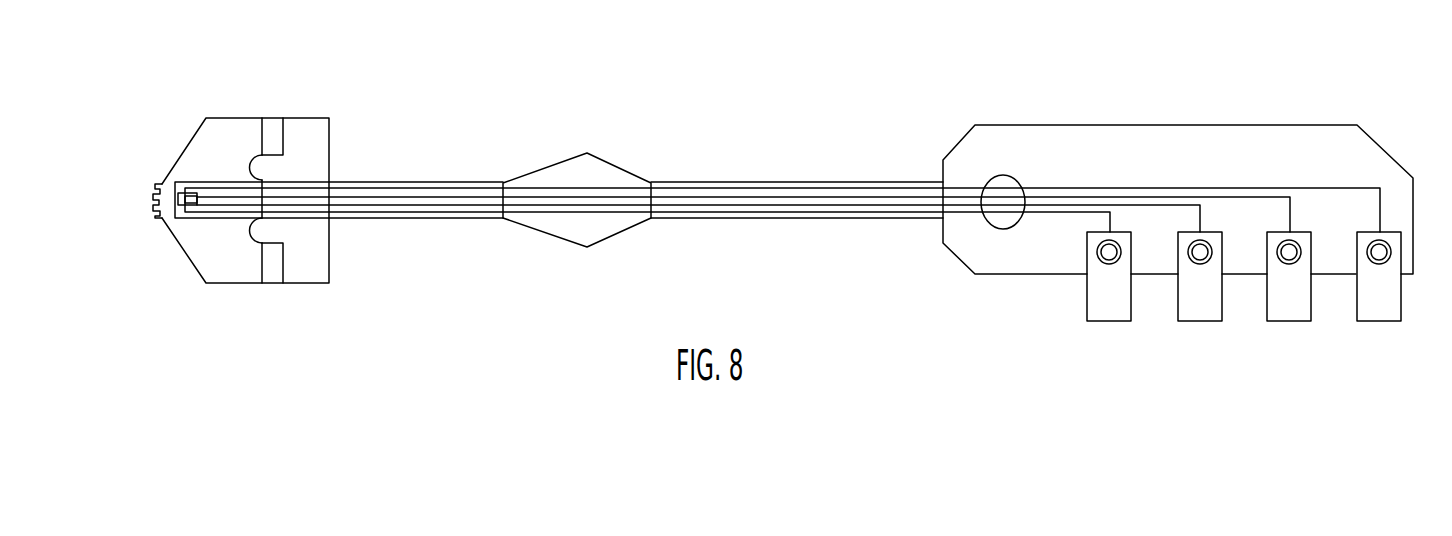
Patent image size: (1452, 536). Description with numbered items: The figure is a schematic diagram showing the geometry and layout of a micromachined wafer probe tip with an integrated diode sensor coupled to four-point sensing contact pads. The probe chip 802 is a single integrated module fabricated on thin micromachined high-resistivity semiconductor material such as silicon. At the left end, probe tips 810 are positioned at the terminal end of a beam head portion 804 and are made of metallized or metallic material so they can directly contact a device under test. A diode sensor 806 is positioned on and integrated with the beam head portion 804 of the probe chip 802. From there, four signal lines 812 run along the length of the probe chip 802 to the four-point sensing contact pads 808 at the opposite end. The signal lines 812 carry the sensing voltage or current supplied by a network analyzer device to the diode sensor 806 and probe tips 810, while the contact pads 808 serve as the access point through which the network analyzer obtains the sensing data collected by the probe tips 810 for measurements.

The probe chip 802 is at (713, 140).
The beam head portion 804 is at (227, 265).
The diode sensor 806 is at (190, 193).
The four-point sensing contact pads 808 is at (1427, 355).
The probe tips 810 is at (145, 177).
The signal lines 812 is at (1002, 175).